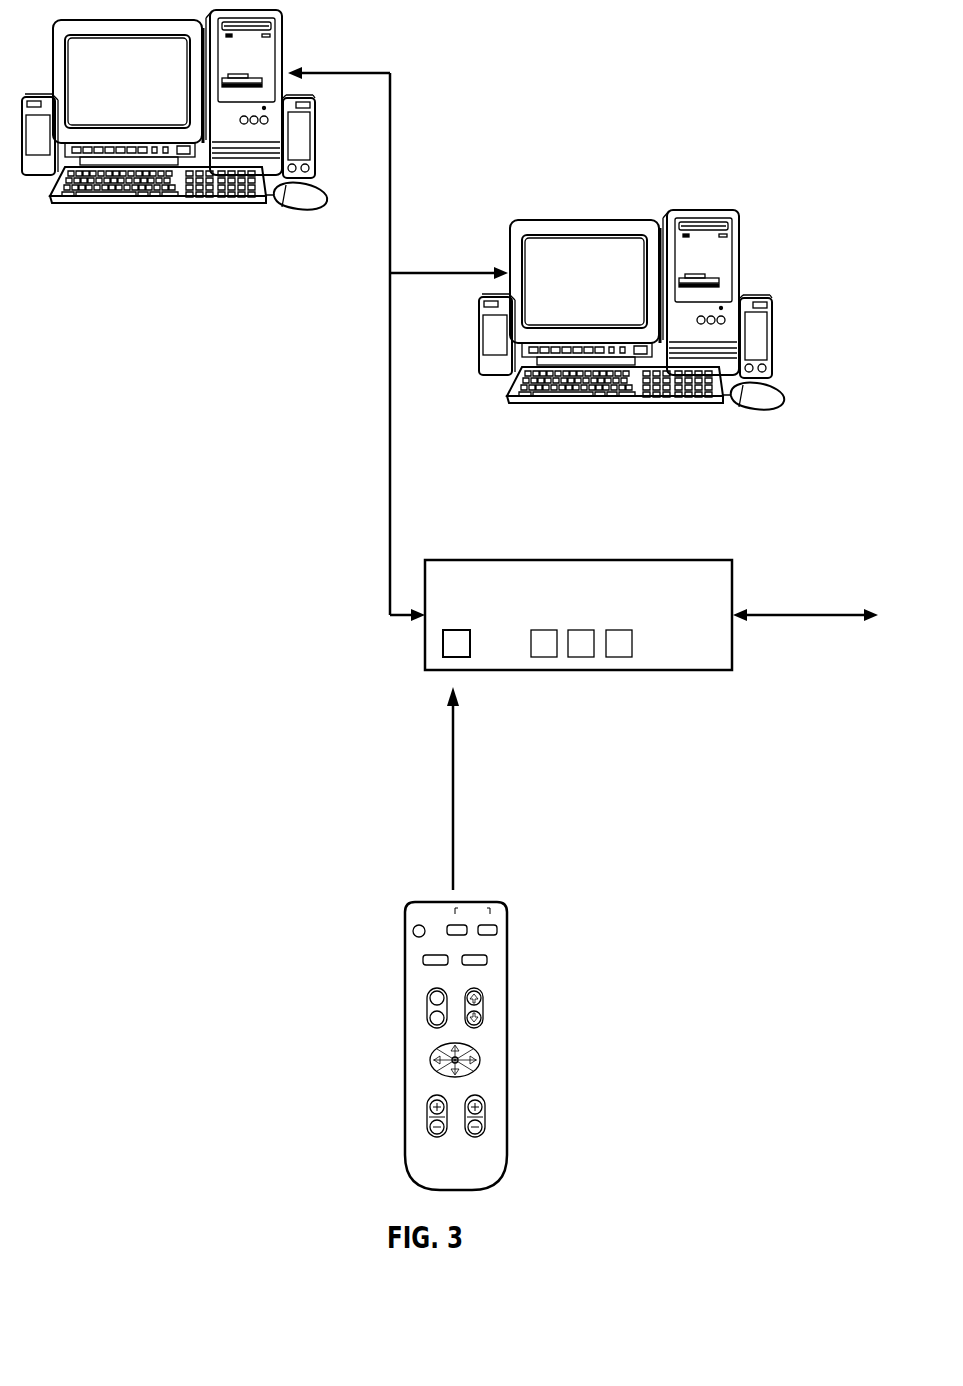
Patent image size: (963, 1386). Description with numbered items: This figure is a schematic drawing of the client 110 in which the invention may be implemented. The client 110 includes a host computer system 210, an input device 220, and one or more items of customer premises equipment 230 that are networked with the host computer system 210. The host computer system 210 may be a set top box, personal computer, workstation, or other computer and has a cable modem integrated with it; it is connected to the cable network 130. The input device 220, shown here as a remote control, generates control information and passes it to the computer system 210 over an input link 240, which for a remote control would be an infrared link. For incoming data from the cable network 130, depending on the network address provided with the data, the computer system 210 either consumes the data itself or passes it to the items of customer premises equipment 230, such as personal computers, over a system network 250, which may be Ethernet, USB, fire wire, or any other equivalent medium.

The client 110 is at (651, 143).
The cable network 130 is at (812, 615).
The host computer system 210 is at (694, 651).
The input device 220 is at (442, 1172).
The customer premises equipment 230 is at (115, 88).
The input link 240 is at (452, 831).
The system network 250 is at (389, 468).